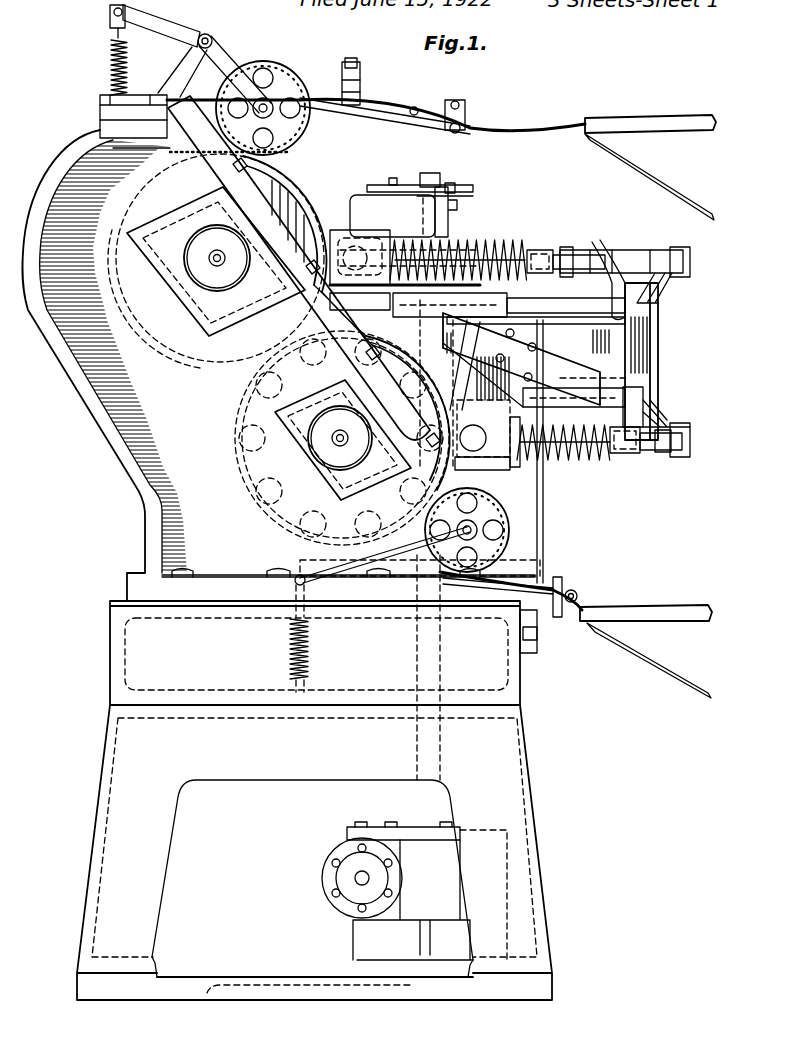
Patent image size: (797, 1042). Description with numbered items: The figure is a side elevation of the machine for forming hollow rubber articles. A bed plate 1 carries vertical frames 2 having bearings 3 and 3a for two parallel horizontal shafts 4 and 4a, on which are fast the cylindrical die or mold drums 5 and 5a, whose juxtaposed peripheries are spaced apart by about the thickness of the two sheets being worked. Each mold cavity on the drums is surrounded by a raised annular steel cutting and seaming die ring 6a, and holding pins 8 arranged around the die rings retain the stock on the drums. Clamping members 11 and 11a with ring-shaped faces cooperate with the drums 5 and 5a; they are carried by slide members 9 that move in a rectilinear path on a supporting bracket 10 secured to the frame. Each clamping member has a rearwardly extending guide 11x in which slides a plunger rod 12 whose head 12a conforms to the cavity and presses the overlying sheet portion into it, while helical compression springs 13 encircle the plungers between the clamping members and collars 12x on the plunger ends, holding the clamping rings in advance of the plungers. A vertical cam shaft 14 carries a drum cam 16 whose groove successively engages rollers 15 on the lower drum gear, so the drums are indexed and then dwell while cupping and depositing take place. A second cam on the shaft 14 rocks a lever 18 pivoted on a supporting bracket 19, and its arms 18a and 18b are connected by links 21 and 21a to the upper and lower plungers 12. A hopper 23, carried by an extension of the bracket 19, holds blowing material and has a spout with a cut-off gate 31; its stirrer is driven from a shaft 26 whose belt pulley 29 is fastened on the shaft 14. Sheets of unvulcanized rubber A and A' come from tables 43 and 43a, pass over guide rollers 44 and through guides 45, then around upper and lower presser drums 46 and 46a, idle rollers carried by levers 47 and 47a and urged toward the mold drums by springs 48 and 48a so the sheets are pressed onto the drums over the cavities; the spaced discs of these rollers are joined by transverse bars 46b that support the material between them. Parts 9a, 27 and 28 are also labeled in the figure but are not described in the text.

The bed plate 1 is at (125, 660).
The vertical frames 2 is at (157, 420).
The bearing 3 is at (175, 262).
The bearing 3a is at (300, 425).
The horizontal shaft 4 is at (210, 268).
The horizontal shaft 4a is at (325, 447).
The cylindrical die or mold member 5 is at (290, 200).
The cylindrical die or mold member 5a is at (268, 537).
The cutting and seaming die ring 6a is at (248, 519).
The holding pins 8 is at (222, 157).
The slide members 9 is at (483, 283).
The lower frame bar 9a is at (623, 388).
The supporting bracket 10 is at (547, 362).
The clamping member 11 is at (340, 232).
The clamping member 11a is at (490, 455).
The rearwardly extending guide 11x is at (447, 242).
The plunger rod 12 is at (493, 243).
The plunger head 12a is at (372, 250).
The collars 12x is at (532, 250).
The helical compression springs 13 is at (515, 243).
The vertical cam shaft 14 is at (427, 792).
The rollers 15 is at (239, 445).
The drum cam 16 is at (420, 563).
The lever 18 is at (594, 252).
The arm of lever 18a is at (660, 290).
The arm of lever 18b is at (660, 420).
The supporting bracket 19 is at (612, 350).
The link 21 is at (640, 258).
The link 21a is at (688, 447).
The hopper 23 is at (360, 208).
The shaft 26 is at (393, 178).
The plate 27 is at (383, 185).
The block 28 is at (449, 183).
The belt pulley 29 is at (470, 194).
The cut-off gate 31 is at (347, 323).
The table 43 is at (685, 113).
The table 43a is at (673, 609).
The guide rollers 44 is at (418, 116).
The guides 45 is at (353, 74).
The upper presser drum 46 is at (283, 85).
The lower presser drum 46a is at (483, 560).
The transverse bars 46b is at (306, 124).
The lever 47 is at (222, 62).
The lever 47a is at (433, 567).
The spring 48 is at (110, 55).
The spring 48a is at (328, 648).
The sheet of plastic material A is at (376, 110).
The sheet of plastic material A' is at (531, 589).